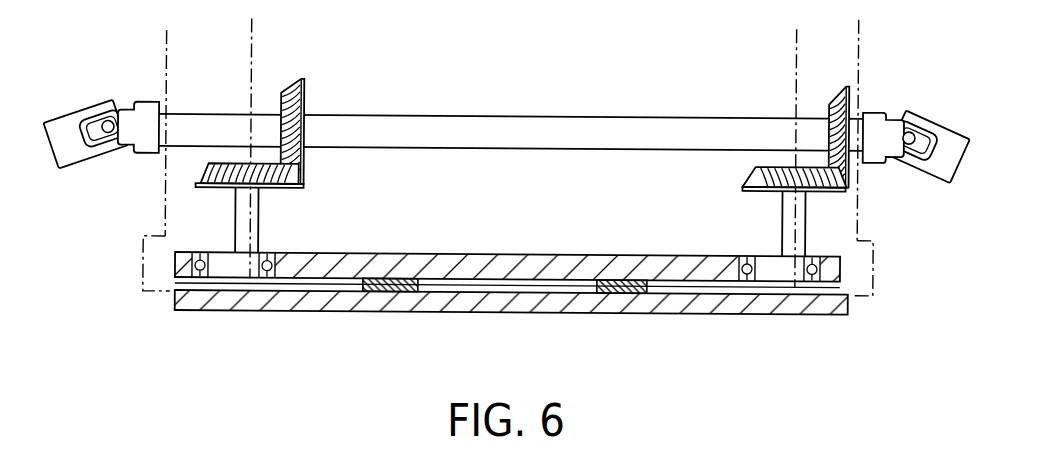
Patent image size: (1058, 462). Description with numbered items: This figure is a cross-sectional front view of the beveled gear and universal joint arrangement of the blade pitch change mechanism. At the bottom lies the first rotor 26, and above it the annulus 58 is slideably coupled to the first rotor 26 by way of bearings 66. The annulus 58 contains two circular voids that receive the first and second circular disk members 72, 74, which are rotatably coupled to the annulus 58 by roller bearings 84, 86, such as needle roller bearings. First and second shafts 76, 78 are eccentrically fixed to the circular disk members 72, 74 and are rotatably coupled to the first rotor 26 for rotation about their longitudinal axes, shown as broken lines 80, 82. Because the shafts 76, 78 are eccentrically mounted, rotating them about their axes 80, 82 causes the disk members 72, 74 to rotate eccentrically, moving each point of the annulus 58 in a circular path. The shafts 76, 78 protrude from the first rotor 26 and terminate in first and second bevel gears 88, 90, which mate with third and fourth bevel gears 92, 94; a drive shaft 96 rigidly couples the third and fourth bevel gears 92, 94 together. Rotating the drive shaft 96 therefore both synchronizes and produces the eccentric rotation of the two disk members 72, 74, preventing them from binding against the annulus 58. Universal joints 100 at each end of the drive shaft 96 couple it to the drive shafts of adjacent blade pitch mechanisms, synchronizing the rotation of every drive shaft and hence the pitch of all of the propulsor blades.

The first rotor 26 is at (547, 308).
The annulus 58 is at (361, 283).
The bearings 66 is at (616, 291).
The first circular disk member 72 is at (224, 268).
The second circular disk member 74 is at (771, 268).
The first shaft 76 is at (259, 217).
The second shaft 78 is at (784, 217).
The longitudinal axis of first shaft 80 is at (251, 47).
The longitudinal axis of second shaft 82 is at (793, 81).
The roller bearing 84 is at (201, 279).
The roller bearing 86 is at (813, 306).
The first bevel gear 88 is at (206, 163).
The second bevel gear 90 is at (757, 168).
The third bevel gear 92 is at (302, 100).
The fourth bevel gear 94 is at (836, 105).
The drive shaft 96 is at (502, 119).
The universal joints 100 is at (925, 98).